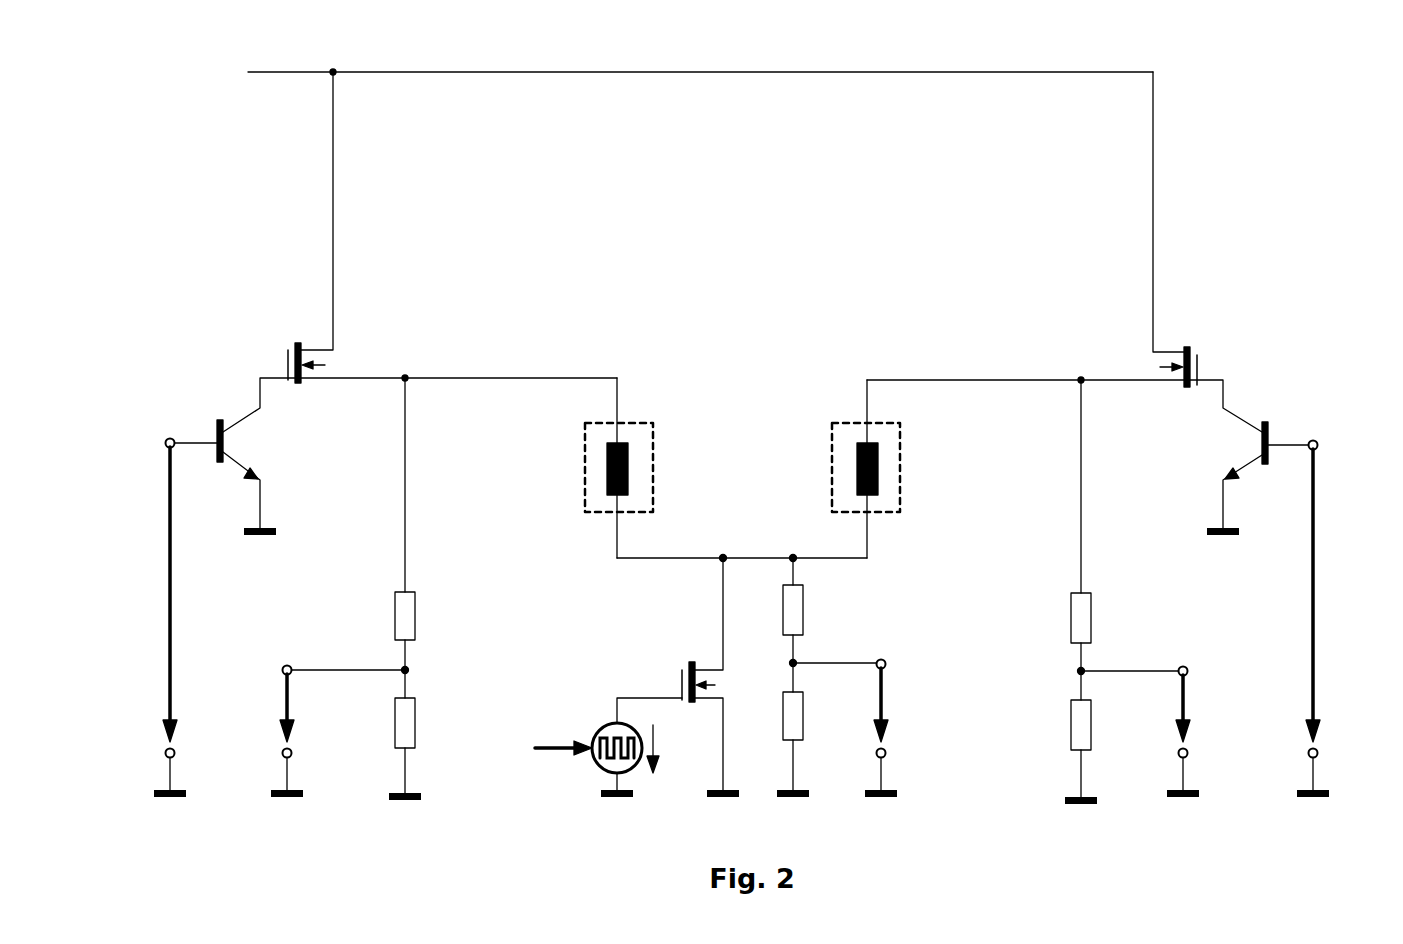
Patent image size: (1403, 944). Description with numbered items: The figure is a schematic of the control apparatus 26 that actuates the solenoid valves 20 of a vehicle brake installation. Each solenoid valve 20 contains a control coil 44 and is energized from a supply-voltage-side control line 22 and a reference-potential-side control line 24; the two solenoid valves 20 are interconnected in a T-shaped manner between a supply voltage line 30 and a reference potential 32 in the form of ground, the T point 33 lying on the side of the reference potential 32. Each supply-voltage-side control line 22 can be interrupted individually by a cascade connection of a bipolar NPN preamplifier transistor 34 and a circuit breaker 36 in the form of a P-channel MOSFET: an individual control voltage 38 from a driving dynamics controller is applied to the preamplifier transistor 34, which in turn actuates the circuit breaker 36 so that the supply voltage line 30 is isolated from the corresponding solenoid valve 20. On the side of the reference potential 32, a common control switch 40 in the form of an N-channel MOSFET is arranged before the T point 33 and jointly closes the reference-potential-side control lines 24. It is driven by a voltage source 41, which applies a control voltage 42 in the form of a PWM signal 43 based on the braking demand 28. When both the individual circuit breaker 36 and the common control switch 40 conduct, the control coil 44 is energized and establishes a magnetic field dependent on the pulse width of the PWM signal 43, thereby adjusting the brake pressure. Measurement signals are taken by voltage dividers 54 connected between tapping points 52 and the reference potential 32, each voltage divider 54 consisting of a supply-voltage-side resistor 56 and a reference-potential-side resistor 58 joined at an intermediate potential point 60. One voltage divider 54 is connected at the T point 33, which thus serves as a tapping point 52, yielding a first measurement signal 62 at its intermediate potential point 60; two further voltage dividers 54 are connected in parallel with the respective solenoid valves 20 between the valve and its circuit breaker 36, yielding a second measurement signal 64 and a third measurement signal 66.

The solenoid valve 20 is at (654, 475).
The supply-voltage-side control line 22 is at (505, 378).
The reference-potential-side control line 24 is at (617, 562).
The control apparatus 26 is at (1320, 124).
The braking demand 28 is at (540, 747).
The supply voltage line 30 is at (683, 72).
The reference potential 32 is at (265, 535).
The T point 33 is at (723, 558).
The preamplifier transistor 34 is at (218, 420).
The circuit breaker 36 is at (298, 343).
The individual control voltage 38 is at (168, 585).
The common control switch 40 is at (690, 665).
The voltage source 41 is at (594, 767).
The control voltage 42 is at (655, 745).
The PWM signal 43 is at (603, 732).
The control coil 44 is at (620, 443).
The tapping point 52 is at (405, 378).
The voltage divider 54 is at (442, 568).
The supply-voltage-side resistor 56 is at (395, 613).
The reference-potential-side resistor 58 is at (395, 732).
The intermediate potential point 60 is at (405, 670).
The first measurement signal 62 is at (884, 700).
The second measurement signal 64 is at (285, 700).
The third measurement signal 66 is at (1189, 700).